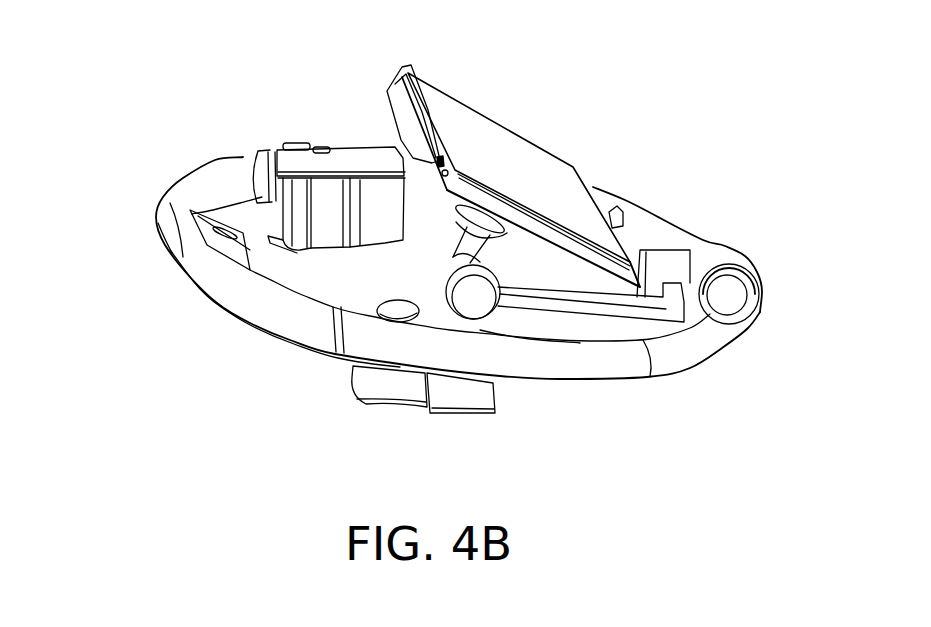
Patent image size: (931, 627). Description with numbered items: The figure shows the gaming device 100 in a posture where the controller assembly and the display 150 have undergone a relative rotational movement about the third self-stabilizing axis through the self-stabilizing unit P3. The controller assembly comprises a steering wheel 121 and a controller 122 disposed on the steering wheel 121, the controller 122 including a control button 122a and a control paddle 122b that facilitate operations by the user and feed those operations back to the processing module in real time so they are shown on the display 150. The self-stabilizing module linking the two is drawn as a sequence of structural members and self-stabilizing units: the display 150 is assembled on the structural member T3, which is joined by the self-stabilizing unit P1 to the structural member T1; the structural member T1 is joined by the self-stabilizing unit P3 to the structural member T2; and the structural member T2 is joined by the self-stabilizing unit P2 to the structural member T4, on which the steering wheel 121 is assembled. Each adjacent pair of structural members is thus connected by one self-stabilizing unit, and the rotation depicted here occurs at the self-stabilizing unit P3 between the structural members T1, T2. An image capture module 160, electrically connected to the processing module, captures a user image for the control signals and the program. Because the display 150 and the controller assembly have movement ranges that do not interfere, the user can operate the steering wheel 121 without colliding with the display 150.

The gaming device 100 is at (763, 490).
The steering wheel 121 is at (725, 342).
The controller 122 is at (357, 147).
The control button 122a is at (287, 147).
The control paddle 122b is at (237, 230).
The display 150 is at (513, 127).
The image capture module 160 is at (308, 224).
The structural member T1 is at (453, 257).
The structural member T2 is at (585, 312).
The structural member T3 is at (413, 77).
The structural member T4 is at (733, 263).
The self-stabilizing unit P1 is at (500, 243).
The self-stabilizing unit P2 is at (670, 260).
The self-stabilizing unit P3 is at (443, 284).